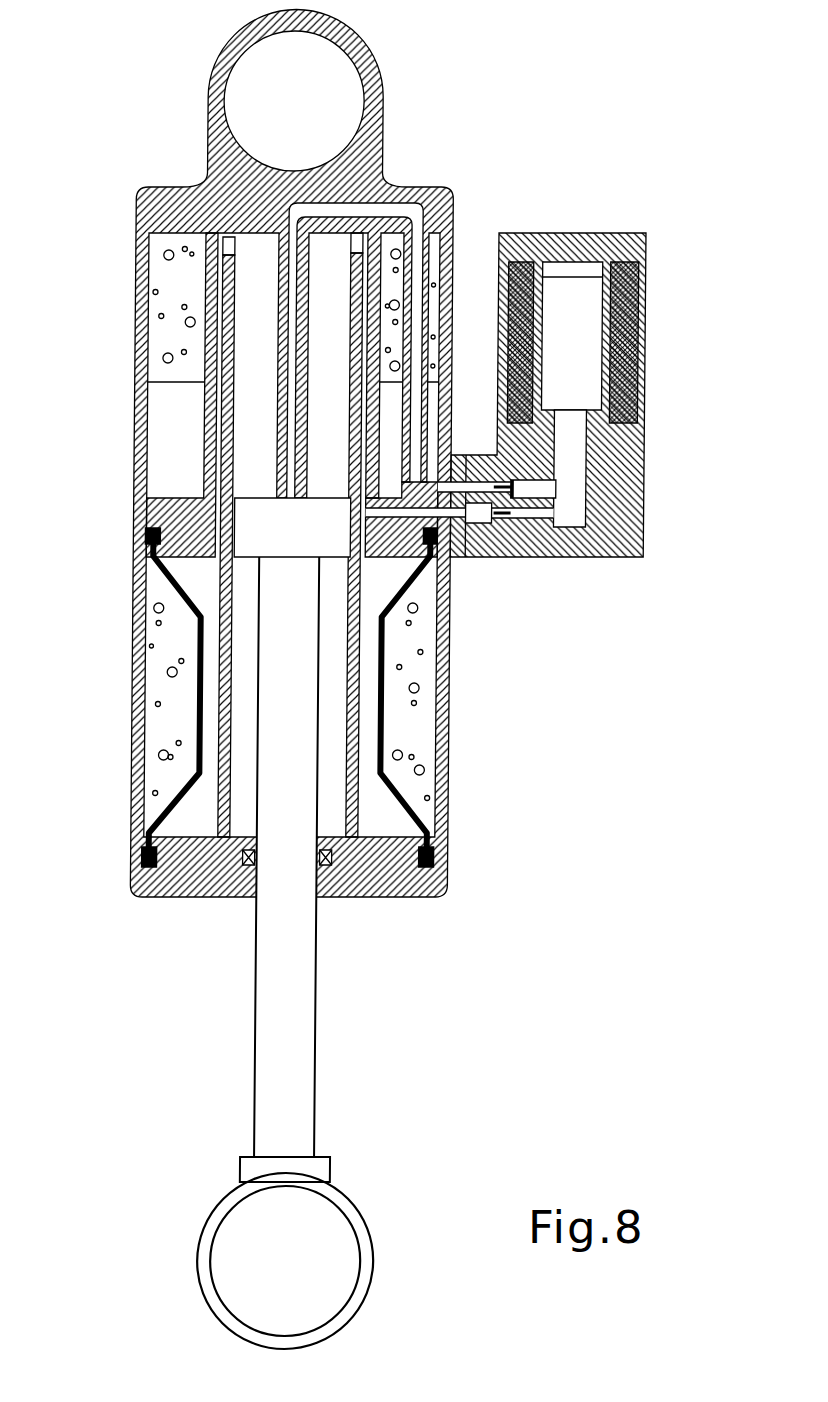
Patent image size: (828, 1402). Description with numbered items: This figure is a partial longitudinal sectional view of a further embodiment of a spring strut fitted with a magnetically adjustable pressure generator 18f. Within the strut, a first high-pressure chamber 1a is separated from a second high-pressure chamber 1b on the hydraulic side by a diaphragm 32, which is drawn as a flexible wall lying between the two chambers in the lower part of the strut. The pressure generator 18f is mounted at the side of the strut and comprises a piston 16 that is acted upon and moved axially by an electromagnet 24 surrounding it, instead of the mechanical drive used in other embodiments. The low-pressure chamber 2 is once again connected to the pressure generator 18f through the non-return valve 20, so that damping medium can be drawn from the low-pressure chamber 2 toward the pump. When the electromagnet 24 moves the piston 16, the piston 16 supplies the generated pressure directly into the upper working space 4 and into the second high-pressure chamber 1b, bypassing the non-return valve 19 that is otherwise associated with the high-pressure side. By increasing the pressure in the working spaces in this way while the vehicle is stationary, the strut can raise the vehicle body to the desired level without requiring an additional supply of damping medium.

The low-pressure chamber 2 is at (160, 337).
The upper working space 4 is at (257, 257).
The electromagnet 24 is at (645, 305).
The pressure generator 18f is at (668, 354).
The piston 16 is at (570, 438).
The non-return valve 20 is at (515, 481).
The non-return valve 19 is at (490, 513).
The diaphragm 32 is at (388, 682).
The first high-pressure chamber 1a is at (423, 733).
The second high-pressure chamber 1b is at (378, 814).